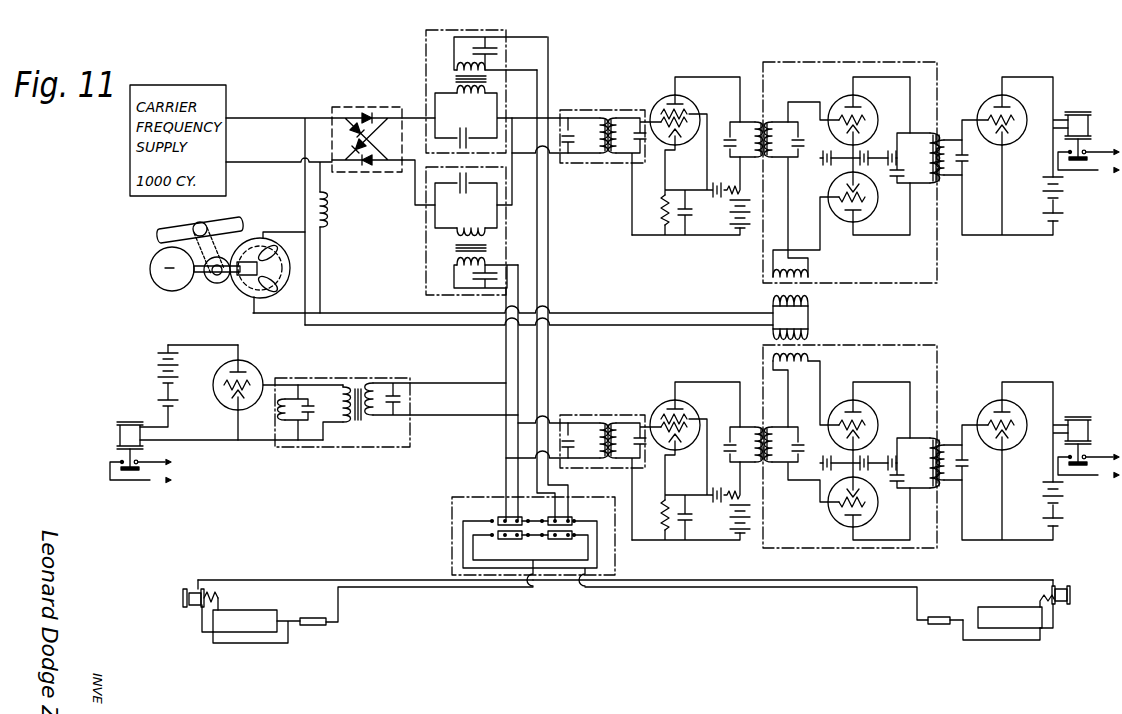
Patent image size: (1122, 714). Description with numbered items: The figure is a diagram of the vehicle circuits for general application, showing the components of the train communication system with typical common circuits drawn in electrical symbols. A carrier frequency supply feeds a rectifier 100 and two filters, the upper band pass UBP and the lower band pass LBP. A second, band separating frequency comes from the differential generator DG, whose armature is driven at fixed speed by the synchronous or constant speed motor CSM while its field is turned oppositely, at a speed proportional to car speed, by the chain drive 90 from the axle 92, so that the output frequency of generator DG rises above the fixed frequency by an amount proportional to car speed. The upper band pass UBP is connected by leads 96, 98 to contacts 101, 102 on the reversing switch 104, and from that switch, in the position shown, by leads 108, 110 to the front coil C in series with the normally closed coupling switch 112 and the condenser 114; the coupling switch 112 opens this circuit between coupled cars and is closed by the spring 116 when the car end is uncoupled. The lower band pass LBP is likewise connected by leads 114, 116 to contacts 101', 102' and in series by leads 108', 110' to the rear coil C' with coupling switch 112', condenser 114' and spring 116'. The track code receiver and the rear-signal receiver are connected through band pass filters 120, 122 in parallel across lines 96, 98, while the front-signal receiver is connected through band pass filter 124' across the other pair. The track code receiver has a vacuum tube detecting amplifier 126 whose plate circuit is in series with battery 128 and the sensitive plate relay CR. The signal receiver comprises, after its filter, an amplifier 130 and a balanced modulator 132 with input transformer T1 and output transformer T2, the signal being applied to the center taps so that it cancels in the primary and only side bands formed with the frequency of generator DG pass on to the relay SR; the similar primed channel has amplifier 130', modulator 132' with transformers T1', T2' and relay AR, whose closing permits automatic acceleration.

The chain drive 90 is at (199, 226).
The axle 92 is at (154, 230).
The lead 96 is at (509, 338).
The lead 98 is at (517, 354).
The rectifier 100 is at (344, 111).
The contact 101 is at (490, 512).
The contact 101' is at (579, 512).
The contact 102 is at (501, 546).
The contact 102' is at (565, 546).
The reversing switch 104 is at (452, 532).
The lead 108 is at (365, 571).
The lead 108' is at (793, 568).
The lead 110 is at (429, 604).
The lead 110' is at (756, 603).
The coupling switch 112 is at (209, 591).
The coupling switch 112' is at (1047, 589).
The condenser 114 is at (449, 346).
The condenser 114' is at (945, 635).
The spring 116 is at (400, 336).
The spring 116' is at (1026, 592).
The band pass filter 120 is at (337, 447).
The band pass filter 122 is at (578, 416).
The band pass filter 124' is at (610, 163).
The vacuum tube detecting amplifier 126 is at (259, 373).
The battery 128 is at (154, 363).
The amplifier 130 is at (718, 461).
The amplifier 130' is at (718, 156).
The balanced modulator 132 is at (839, 458).
The balanced modulator 132' is at (825, 172).
The sensitive plate relay AR is at (1078, 112).
The sensitive plate circuit relay SR is at (1078, 418).
The sensitive plate relay CR is at (128, 419).
The synchronous or constant speed motor CSM is at (156, 285).
The differential generator DG is at (261, 300).
The lower band pass LBP is at (424, 63).
The upper band pass UBP is at (426, 260).
The input transformer T1 is at (809, 358).
The input transformer T1' is at (811, 274).
The output transformer T2 is at (929, 448).
The output transformer T2' is at (929, 144).
The coil C is at (256, 614).
The coil C' is at (1002, 611).